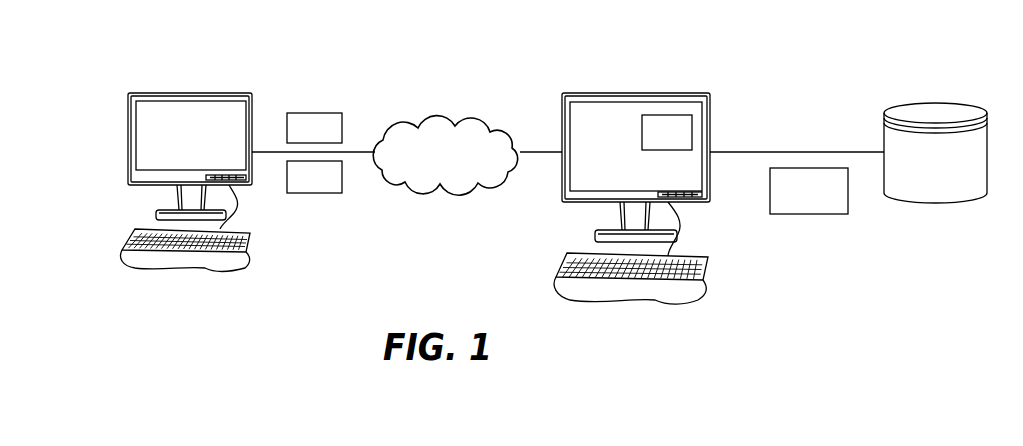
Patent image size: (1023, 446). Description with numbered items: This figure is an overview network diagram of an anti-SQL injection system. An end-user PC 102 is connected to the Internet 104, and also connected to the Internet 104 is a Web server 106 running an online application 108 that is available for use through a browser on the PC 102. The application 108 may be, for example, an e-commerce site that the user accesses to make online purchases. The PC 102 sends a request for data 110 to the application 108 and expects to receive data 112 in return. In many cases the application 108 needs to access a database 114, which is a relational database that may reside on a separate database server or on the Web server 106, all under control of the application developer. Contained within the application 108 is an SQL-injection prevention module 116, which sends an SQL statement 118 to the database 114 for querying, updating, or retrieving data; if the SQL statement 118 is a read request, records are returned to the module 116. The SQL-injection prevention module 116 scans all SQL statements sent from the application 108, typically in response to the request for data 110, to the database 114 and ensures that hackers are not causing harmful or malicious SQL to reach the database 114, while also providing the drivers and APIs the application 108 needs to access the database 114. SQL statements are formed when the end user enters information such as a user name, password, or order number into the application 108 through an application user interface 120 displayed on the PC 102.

The end-user PC 102 is at (200, 93).
The Internet 104 is at (465, 164).
The Web server 106 is at (606, 93).
The online application 108 is at (619, 165).
The request for data 110 is at (311, 113).
The data 112 is at (311, 193).
The database 114 is at (916, 113).
The SQL-injection prevention module 116 is at (692, 128).
The SQL statement 118 is at (805, 214).
The application user interface 120 is at (208, 146).